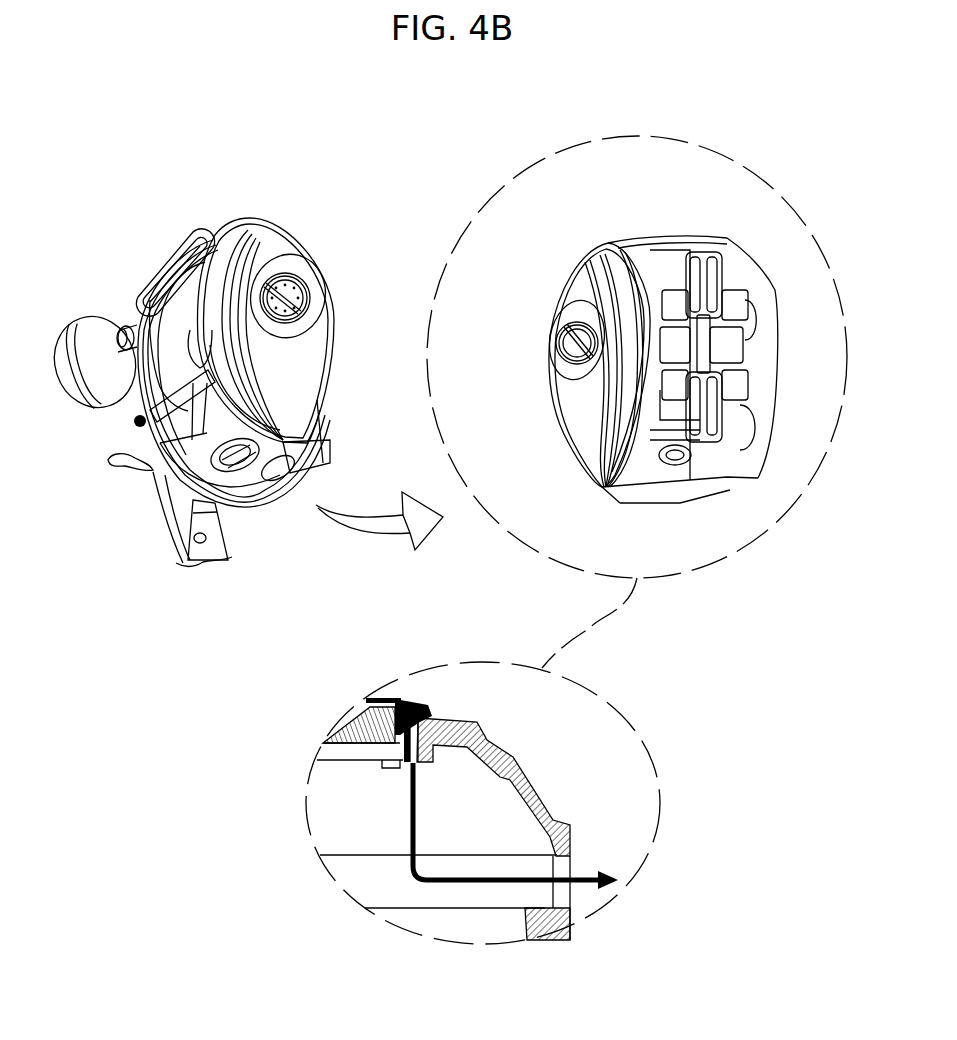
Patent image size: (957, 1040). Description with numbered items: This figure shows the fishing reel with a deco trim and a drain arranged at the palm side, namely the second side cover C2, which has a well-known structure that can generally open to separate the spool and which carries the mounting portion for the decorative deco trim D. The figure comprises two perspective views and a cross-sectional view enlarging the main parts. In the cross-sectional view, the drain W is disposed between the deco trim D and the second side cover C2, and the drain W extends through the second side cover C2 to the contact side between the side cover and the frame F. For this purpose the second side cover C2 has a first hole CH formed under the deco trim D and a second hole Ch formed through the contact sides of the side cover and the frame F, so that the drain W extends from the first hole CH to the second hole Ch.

The deco trim D is at (297, 277).
The second side cover C2 is at (312, 377).
The first hole CH is at (421, 766).
The second hole Ch is at (570, 862).
The drain W is at (619, 884).
The frame F is at (547, 938).